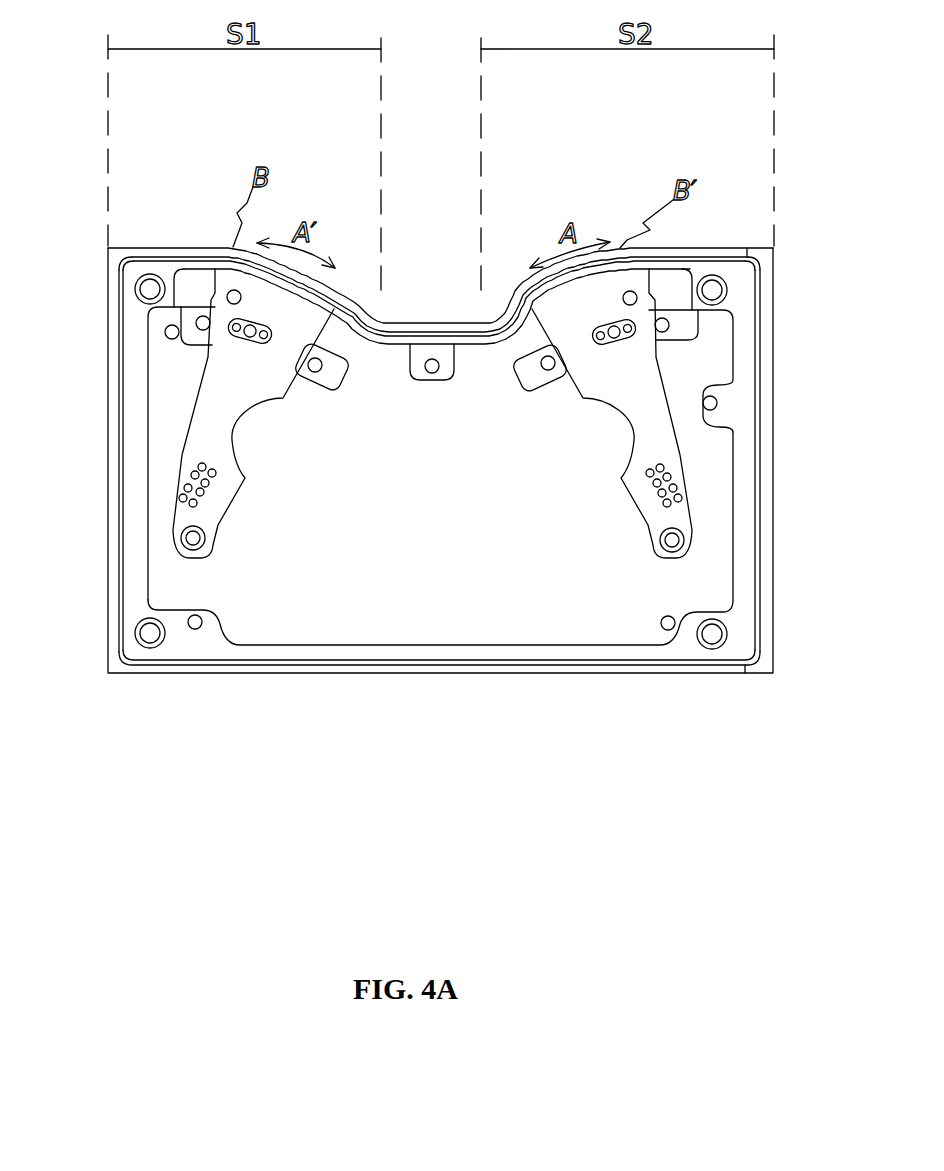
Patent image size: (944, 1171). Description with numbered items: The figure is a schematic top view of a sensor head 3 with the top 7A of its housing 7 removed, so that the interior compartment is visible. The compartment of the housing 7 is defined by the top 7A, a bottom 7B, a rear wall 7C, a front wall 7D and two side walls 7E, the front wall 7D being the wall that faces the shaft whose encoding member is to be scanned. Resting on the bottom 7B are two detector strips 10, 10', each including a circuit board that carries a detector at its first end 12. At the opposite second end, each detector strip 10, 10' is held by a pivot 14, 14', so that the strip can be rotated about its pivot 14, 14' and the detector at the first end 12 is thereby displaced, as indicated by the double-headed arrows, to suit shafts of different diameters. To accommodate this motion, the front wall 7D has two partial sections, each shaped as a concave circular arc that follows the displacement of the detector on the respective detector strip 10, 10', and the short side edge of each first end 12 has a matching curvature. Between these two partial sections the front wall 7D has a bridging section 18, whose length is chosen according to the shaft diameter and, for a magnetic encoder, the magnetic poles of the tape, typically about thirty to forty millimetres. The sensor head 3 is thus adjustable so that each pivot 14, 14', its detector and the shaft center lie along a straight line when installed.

The sensor head 3 is at (243, 832).
The housing 7 is at (160, 685).
The top 7A is at (129, 438).
The bottom 7B is at (446, 569).
The rear wall 7C is at (622, 675).
The front wall 7D is at (183, 248).
The side wall 7E is at (108, 365).
The detector strip 10 is at (598, 413).
The detector strip 10' is at (254, 413).
The first end 12 is at (307, 305).
The pivot 14 is at (618, 534).
The pivot 14' is at (242, 506).
The bridging section 18 is at (415, 320).